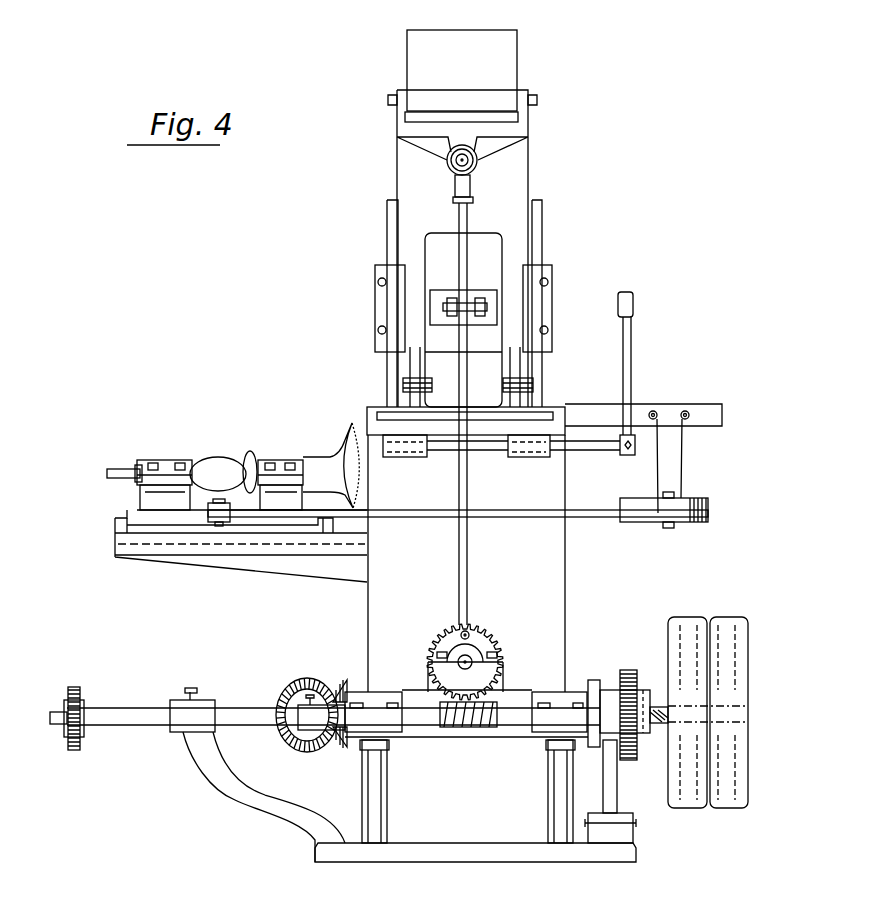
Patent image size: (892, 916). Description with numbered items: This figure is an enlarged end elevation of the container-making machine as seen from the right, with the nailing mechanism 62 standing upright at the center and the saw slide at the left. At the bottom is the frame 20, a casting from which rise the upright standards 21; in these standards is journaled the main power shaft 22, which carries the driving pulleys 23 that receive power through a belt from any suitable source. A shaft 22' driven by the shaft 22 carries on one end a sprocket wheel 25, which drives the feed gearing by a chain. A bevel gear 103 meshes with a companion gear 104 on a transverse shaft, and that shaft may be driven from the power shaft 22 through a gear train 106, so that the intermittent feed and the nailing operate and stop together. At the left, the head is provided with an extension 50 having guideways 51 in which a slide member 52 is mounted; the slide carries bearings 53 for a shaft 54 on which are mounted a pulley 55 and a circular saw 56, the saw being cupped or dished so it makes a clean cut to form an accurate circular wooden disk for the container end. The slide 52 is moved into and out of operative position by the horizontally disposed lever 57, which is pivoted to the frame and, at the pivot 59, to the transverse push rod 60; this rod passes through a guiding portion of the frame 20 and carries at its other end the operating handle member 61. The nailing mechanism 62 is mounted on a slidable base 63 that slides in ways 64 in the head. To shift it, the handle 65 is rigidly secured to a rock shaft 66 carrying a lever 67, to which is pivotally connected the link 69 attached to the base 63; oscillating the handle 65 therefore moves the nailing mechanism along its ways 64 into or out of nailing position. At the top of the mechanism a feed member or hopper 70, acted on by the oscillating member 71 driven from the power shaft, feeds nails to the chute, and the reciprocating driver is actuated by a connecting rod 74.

The frame 20 is at (440, 858).
The upright standards 21 is at (233, 785).
The main power shaft 22 is at (645, 682).
The shaft 22' is at (325, 724).
The driving pulleys 23 is at (723, 809).
The sprocket wheel 25 is at (78, 688).
The extension 50 is at (185, 543).
The guideways 51 is at (328, 533).
The slide member 52 is at (153, 528).
The bearings 53 is at (288, 433).
The shaft 54 is at (128, 446).
The pulley 55 is at (223, 460).
The circular saw 56 is at (350, 432).
The horizontally disposed lever 57 is at (392, 512).
The pivot 59 is at (670, 523).
The transverse push rod 60 is at (662, 524).
The operating handle member 61 is at (693, 503).
The nailing mechanism 62 is at (542, 162).
The slidable base 63 is at (505, 362).
The ways 64 is at (552, 410).
The handle 65 is at (627, 300).
The rock shaft 66 is at (589, 452).
The lever 67 is at (512, 448).
The link 69 is at (420, 383).
The feed member or hopper 70 is at (507, 72).
The oscillating member 71 is at (460, 216).
The connecting rod 74 is at (458, 589).
The bevel gear 103 is at (288, 680).
The companion gear 104 is at (340, 676).
The gear train 106 is at (630, 763).